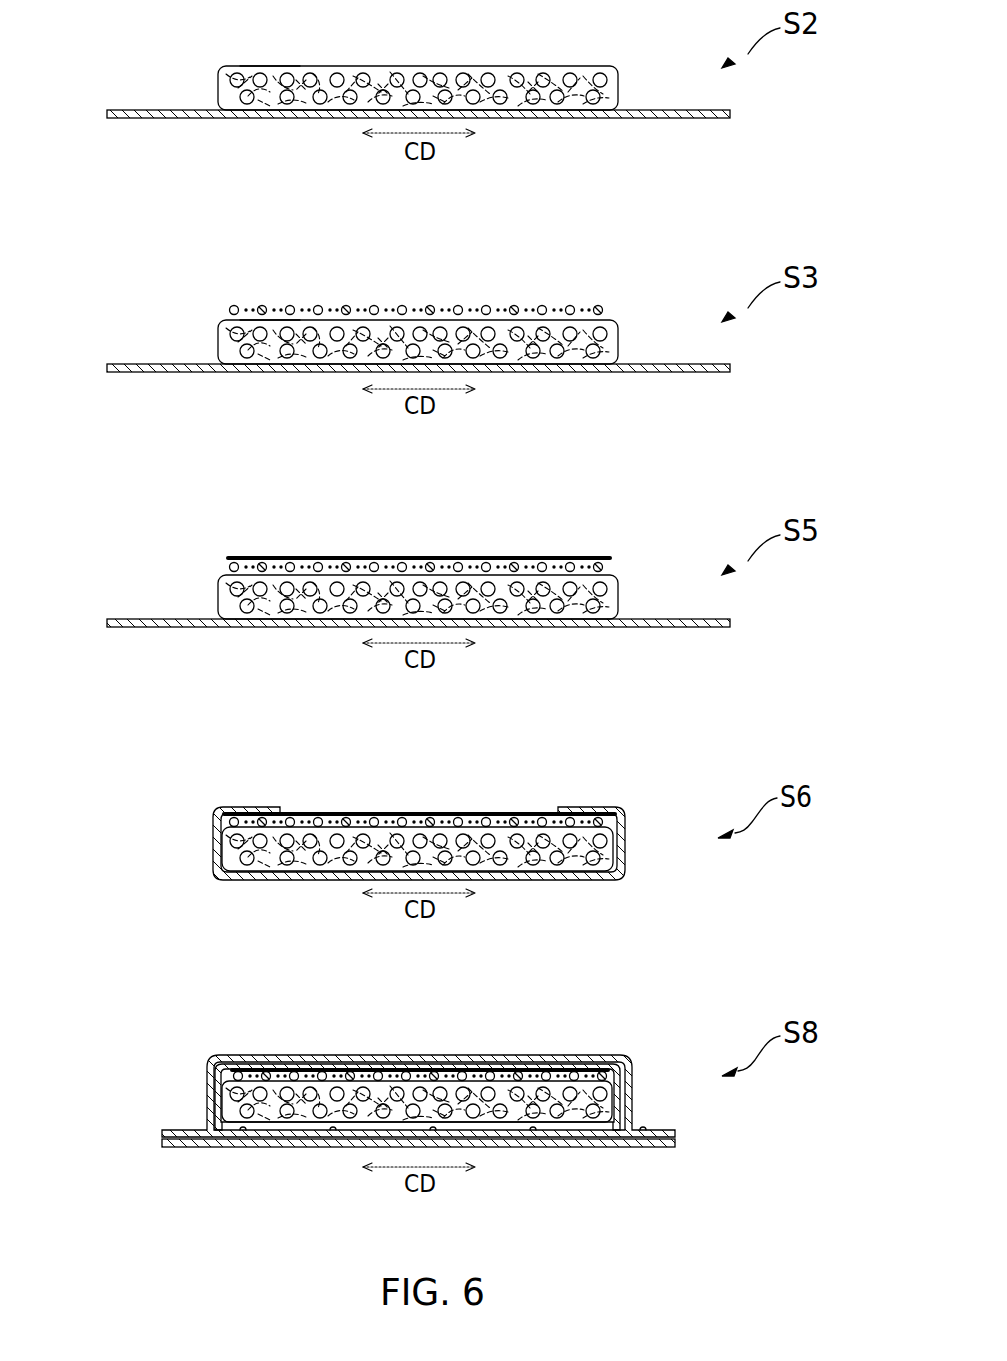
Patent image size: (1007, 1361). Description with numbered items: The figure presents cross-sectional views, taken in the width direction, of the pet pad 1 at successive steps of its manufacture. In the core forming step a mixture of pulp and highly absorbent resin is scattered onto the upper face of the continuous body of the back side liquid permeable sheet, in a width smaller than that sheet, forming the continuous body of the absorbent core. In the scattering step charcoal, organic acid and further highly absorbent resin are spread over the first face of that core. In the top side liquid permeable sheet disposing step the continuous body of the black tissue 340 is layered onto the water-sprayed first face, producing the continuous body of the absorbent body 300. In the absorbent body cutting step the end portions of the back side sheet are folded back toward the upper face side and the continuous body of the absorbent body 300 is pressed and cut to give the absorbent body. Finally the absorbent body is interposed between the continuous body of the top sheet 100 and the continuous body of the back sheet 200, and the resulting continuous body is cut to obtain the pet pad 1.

The pet pad 1 is at (403, 1077).
The continuous body of the top sheet 100 is at (318, 1054).
The continuous body of the back sheet 200 is at (255, 1148).
The continuous body of the absorbent body 300 is at (389, 556).
The continuous body of the black tissue 340 is at (565, 555).